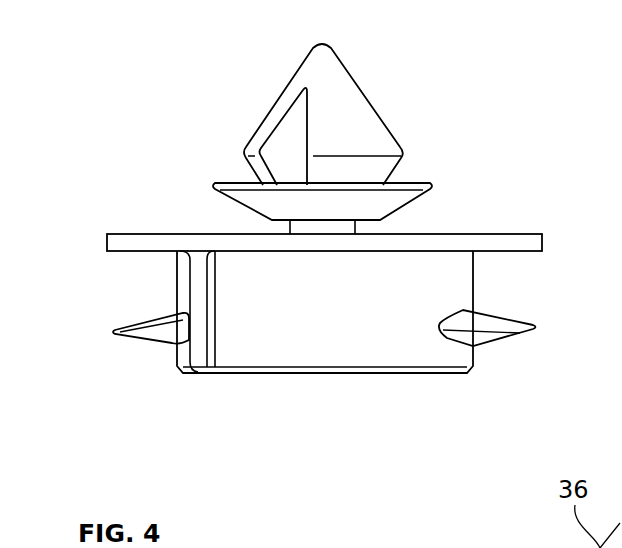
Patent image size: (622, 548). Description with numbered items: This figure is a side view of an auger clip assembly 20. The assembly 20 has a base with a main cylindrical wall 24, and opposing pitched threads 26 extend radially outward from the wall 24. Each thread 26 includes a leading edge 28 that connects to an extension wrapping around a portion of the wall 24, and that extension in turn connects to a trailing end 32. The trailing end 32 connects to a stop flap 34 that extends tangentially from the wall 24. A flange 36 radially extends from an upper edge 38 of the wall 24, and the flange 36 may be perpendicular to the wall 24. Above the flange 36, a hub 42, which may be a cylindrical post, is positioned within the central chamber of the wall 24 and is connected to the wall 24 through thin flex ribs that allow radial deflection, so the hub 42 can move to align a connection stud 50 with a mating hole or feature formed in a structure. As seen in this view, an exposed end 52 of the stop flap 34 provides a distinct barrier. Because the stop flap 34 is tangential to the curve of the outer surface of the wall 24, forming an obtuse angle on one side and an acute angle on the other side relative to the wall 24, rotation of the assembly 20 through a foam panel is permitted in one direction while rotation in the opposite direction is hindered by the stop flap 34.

The auger clip assembly 20 is at (463, 100).
The main cylindrical wall 24 is at (312, 318).
The opposing pitched threads 26 is at (117, 338).
The leading edge 28 is at (445, 335).
The trailing end 32 is at (170, 350).
The stop flap 34 is at (197, 258).
The flange 36 is at (518, 234).
The upper edge 38 is at (458, 251).
The hub 42 is at (348, 227).
The connection stud 50 is at (352, 85).
The exposed end 52 is at (200, 338).